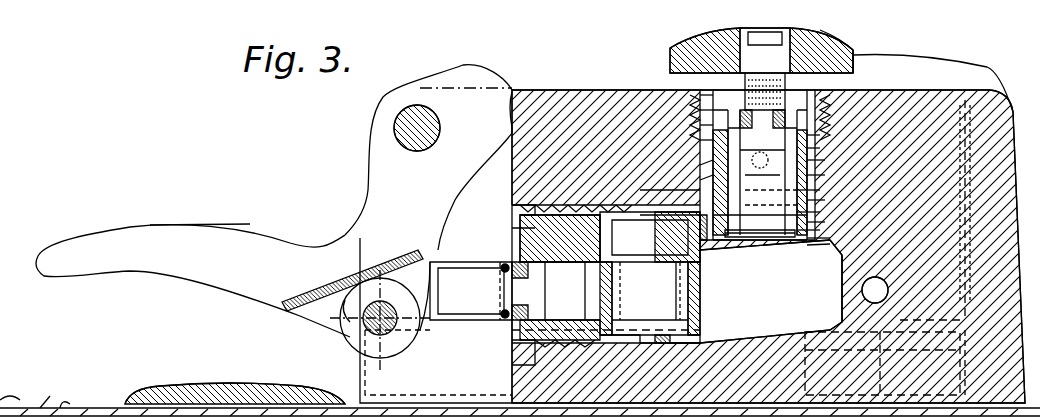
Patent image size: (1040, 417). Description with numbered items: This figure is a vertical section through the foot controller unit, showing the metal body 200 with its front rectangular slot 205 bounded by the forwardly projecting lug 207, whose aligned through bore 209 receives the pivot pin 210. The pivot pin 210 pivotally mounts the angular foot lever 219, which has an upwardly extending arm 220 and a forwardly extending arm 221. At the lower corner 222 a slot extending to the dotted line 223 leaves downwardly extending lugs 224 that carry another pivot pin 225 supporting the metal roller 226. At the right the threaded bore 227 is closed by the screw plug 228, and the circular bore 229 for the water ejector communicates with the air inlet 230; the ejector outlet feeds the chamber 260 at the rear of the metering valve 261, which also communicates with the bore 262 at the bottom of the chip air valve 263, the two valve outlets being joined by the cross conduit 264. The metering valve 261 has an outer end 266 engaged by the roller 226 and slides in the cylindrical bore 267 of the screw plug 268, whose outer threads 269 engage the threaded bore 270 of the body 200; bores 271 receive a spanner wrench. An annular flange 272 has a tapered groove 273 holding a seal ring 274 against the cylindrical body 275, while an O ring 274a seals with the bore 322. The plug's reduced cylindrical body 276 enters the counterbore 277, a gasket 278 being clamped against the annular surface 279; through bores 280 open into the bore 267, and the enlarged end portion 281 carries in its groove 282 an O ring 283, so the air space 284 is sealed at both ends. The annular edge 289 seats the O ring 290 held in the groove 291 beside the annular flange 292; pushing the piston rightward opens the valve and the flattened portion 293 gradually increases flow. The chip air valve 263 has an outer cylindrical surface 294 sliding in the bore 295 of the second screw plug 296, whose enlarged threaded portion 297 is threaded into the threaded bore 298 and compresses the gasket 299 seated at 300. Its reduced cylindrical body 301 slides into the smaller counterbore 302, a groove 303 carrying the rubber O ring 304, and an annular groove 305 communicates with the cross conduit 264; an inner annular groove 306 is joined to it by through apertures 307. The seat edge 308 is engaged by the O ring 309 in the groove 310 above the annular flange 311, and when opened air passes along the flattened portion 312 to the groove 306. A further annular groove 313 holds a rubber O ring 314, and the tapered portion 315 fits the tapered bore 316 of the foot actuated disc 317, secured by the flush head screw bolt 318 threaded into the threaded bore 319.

The metal body 200 is at (572, 88).
The rectangular slot 205 is at (508, 184).
The forwardly projecting lug 207 is at (442, 88).
The aligned through bore 209 is at (396, 135).
The pivot pin 210 is at (396, 116).
The foot lever 219 is at (262, 226).
The upwardly extending flange or arm 220 is at (385, 190).
The forwardly extending arm or flange 221 is at (258, 270).
The lower corner 222 is at (366, 382).
The dotted line 223 is at (360, 276).
The downwardly extending lug 224 is at (392, 345).
The pivot pin 225 is at (372, 338).
The metal roller 226 is at (348, 310).
The threaded bore 227 is at (962, 126).
The screw plug 228 is at (968, 70).
The circular bore 229 is at (960, 206).
The air inlet 230 is at (889, 284).
The bore or chamber 260 is at (777, 340).
The metering valve 261 is at (560, 328).
The bore 262 is at (812, 230).
The chip air valve 263 is at (812, 176).
The cross conduit 264 is at (650, 186).
The outer end 266 is at (430, 325).
The cylindrical bore 267 is at (560, 238).
The screw plug 268 is at (600, 200).
The outer threads 269 is at (540, 200).
The threaded bore 270 is at (520, 210).
The bore 271 is at (520, 226).
The annular flange 272 is at (508, 340).
The tapered groove 273 is at (496, 318).
The seal ring 274 is at (523, 291).
The O ring 274a is at (570, 305).
The cylindrical body 275 is at (470, 262).
The reduced cylindrical body 276 is at (625, 350).
The counterbore 277 is at (662, 352).
The gasket 278 is at (560, 390).
The annular surface 279 is at (640, 210).
The through bore 280 is at (630, 296).
The enlarged cylindrical end portion 281 is at (690, 345).
The peripherally extending groove 282 is at (680, 350).
The O ring 283 is at (668, 350).
The air space 284 is at (644, 345).
The annular edge 289 is at (666, 291).
The O ring 290 is at (696, 227).
The groove 291 is at (668, 291).
The annular flange 292 is at (765, 291).
The flattened portion 293 is at (614, 291).
The outer cylindrical surface 294 is at (812, 150).
The bore 295 is at (700, 128).
The second screw plug 296 is at (700, 114).
The enlarged threaded portion 297 is at (700, 100).
The threaded bore 298 is at (696, 94).
The gasket 299 is at (708, 138).
The gasket seat 300 is at (812, 137).
The reduced cylindrical body 301 is at (812, 191).
The smaller counterbore 302 is at (812, 162).
The groove 303 is at (812, 212).
The rubber O ring 304 is at (812, 202).
The annular groove 305 is at (708, 157).
The annular groove 306 is at (760, 165).
The through aperture 307 is at (765, 92).
The valve seat edge 308 is at (812, 238).
The O ring 309 is at (812, 245).
The groove 310 is at (812, 222).
The annular flange 311 is at (760, 236).
The flattened portion 312 is at (760, 168).
The annular groove 313 is at (784, 118).
The rubber O ring 314 is at (742, 118).
The tapered portion 315 is at (845, 50).
The tapered bore 316 is at (830, 35).
The foot actuated disc 317 is at (675, 54).
The flush head screw bolt 318 is at (750, 38).
The threaded bore 319 is at (792, 34).
The cylindrical bore 322 is at (565, 349).